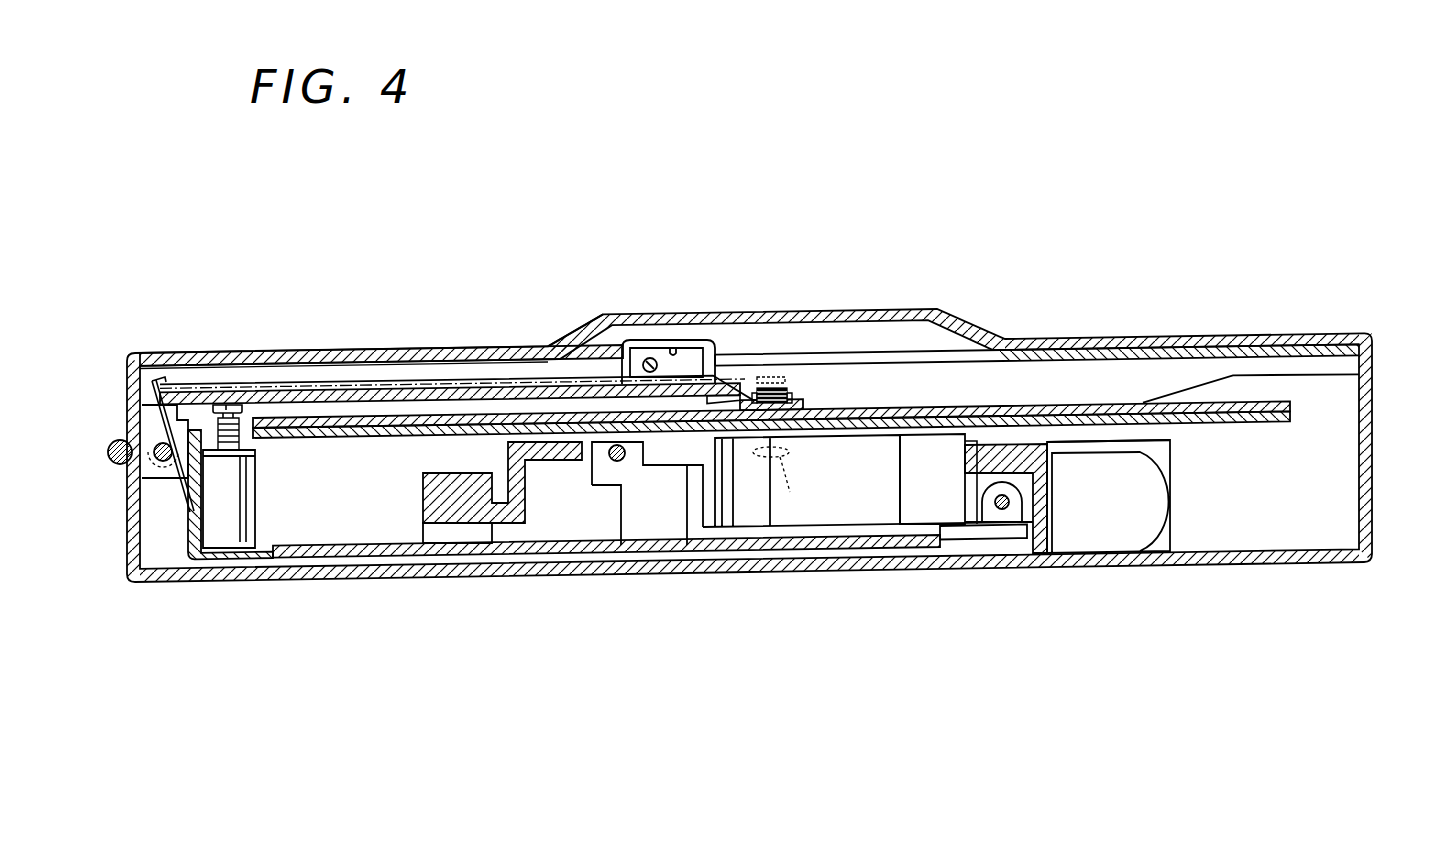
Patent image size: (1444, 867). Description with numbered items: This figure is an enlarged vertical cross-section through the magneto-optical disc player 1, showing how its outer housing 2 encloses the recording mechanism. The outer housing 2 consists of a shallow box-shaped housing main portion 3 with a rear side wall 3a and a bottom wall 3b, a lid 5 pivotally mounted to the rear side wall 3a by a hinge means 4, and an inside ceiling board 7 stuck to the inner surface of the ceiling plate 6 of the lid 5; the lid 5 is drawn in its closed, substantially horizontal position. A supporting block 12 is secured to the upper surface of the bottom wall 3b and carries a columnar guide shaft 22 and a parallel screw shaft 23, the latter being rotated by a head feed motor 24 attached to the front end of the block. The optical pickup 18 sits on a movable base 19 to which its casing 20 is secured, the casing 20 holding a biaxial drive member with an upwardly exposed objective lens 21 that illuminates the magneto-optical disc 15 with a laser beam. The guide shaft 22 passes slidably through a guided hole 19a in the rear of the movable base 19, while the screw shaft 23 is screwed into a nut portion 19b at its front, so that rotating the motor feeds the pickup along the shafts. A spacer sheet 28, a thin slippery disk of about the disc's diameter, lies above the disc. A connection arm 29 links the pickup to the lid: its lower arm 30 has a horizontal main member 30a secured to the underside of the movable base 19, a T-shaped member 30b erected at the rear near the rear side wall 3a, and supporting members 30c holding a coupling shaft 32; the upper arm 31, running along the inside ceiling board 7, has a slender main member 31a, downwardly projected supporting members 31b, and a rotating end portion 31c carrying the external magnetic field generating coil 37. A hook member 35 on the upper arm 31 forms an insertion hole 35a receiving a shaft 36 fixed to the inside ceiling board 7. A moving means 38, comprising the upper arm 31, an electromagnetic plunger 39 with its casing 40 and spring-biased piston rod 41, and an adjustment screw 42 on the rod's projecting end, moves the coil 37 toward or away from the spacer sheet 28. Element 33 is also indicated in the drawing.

The magneto-optical disc player 1 is at (177, 300).
The outer housing 2 is at (1418, 343).
The housing main portion 3 is at (747, 460).
The rear side wall 3a is at (129, 521).
The bottom wall 3b is at (588, 575).
The hinge means 4 is at (111, 446).
The lid 5 is at (1362, 371).
The ceiling plate 6 is at (1058, 333).
The inside ceiling board 7 is at (1362, 347).
The supporting block 12 is at (1170, 445).
The magneto-optical disc 15 is at (1289, 419).
The optical pickup 18 is at (983, 540).
The movable base 19 is at (882, 530).
The guided hole 19a is at (627, 461).
The nut portion 19b is at (990, 495).
The casing 20 is at (830, 517).
The objective lens 21 is at (782, 482).
The guide shaft 22 is at (600, 486).
The screw shaft 23 is at (1012, 502).
The head feed motor 24 is at (1168, 500).
The spacer sheet 28 is at (1289, 404).
The connection arm 29 is at (380, 288).
The lower arm 30 is at (330, 545).
The main member 30a is at (517, 552).
The member of T-letter configuration 30b is at (196, 530).
The supporting member 30c is at (143, 478).
The upper arm 31 is at (316, 391).
The main member 31a is at (513, 389).
The supporting member 31b is at (147, 412).
The rotating end portion 31c is at (803, 409).
The coupling shaft 32 is at (162, 471).
The spring 33 is at (140, 380).
The hook member 35 is at (603, 318).
The insertion hole 35a is at (676, 352).
The shaft 36 is at (651, 358).
The external magnetic field generating coil 37 is at (772, 376).
The moving means 38 is at (188, 362).
The electromagnetic plunger 39 is at (256, 491).
The casing 40 is at (256, 471).
The piston rod 41 is at (242, 428).
The adjustment screw 42 is at (240, 404).